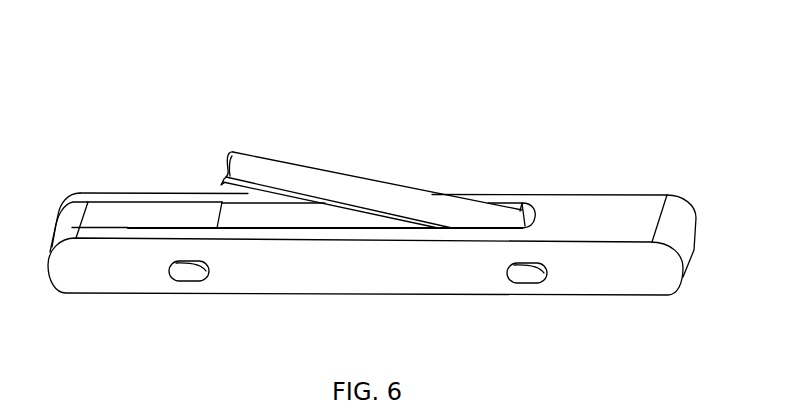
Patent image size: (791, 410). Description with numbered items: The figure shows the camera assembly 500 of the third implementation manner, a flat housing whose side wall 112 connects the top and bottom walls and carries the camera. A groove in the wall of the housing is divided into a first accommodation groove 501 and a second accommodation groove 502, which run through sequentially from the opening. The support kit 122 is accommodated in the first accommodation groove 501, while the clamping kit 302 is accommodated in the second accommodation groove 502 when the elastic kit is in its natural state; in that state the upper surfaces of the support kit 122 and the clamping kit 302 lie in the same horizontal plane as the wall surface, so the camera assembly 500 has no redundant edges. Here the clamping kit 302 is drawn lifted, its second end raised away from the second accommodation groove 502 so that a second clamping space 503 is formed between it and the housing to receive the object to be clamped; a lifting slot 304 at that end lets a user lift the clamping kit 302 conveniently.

The camera assembly 500 is at (375, 54).
The side wall 112 is at (600, 225).
The support kit 122 is at (146, 205).
The clamping kit 302 is at (302, 173).
The lifting slot 304 is at (228, 155).
The first accommodation groove 501 is at (226, 218).
The second clamping space 503 is at (237, 195).
The second accommodation groove 502 is at (297, 213).